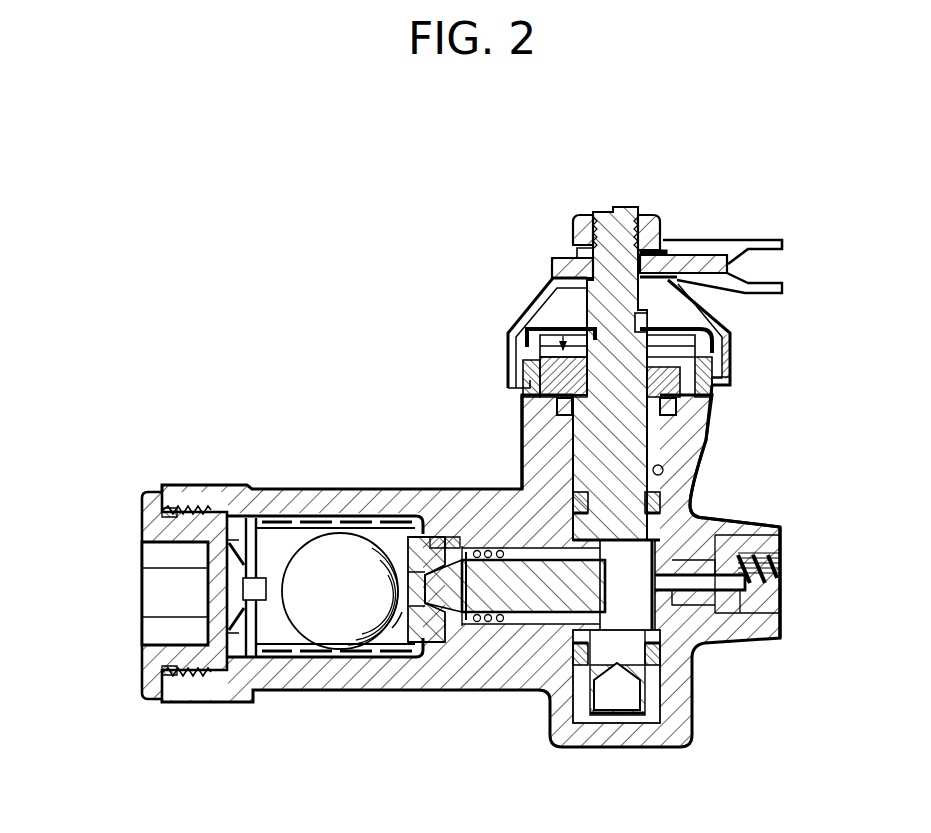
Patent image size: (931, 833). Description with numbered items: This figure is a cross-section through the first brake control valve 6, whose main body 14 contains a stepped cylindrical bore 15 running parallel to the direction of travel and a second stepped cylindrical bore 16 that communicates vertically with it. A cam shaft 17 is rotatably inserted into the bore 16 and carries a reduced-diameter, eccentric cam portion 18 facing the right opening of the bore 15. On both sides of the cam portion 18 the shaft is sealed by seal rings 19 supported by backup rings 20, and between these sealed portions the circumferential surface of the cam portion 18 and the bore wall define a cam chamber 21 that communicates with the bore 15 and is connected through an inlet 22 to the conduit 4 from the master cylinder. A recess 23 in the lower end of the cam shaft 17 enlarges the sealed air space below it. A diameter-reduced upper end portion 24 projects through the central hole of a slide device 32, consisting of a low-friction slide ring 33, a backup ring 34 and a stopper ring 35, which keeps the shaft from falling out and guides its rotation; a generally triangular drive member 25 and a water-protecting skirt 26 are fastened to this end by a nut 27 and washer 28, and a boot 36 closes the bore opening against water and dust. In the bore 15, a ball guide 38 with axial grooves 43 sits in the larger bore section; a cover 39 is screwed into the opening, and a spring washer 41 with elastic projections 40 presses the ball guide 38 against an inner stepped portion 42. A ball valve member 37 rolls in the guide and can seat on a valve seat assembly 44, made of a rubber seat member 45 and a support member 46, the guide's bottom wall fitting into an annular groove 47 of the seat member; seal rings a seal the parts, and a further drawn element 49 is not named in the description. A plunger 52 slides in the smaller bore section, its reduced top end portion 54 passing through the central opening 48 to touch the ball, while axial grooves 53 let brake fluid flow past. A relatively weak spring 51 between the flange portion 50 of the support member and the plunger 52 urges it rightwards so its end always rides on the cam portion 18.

The conduit 4 is at (833, 582).
The first brake control valve 6 is at (760, 374).
The main body 14 is at (345, 503).
The stepped cylindrical bore 15 is at (158, 535).
The stepped cylindrical bore 16 is at (662, 468).
The cam shaft 17 is at (627, 442).
The cam portion 18 is at (705, 622).
The seal rings 19 is at (661, 508).
The backup rings 20 is at (661, 493).
The cam chamber 21 is at (782, 530).
The inlet 22 is at (785, 577).
The recess 23 is at (625, 690).
The upper end portion 24 is at (647, 207).
The drive member 25 is at (782, 241).
The water-protecting skirt 26 is at (725, 320).
The nut 27 is at (660, 227).
The washer 28 is at (655, 250).
The slide device 32 is at (562, 350).
The slide ring 33 is at (523, 388).
The backup ring 34 is at (532, 373).
The stopper ring 35 is at (560, 327).
The boot 36 is at (735, 347).
The ball valve member 37 is at (356, 587).
The ball guide 38 is at (265, 512).
The cover 39 is at (178, 596).
The elastic projections 40 is at (247, 587).
The spring washer 41 is at (237, 655).
The inner stepped portion 42 is at (445, 632).
The grooves 43 is at (297, 522).
The valve seat assembly 44 is at (400, 633).
The seat member 45 is at (408, 645).
The support member 46 is at (465, 622).
The annular groove 47 is at (435, 642).
The central opening 48 is at (440, 537).
The spring 49 is at (484, 622).
The flange portion 50 is at (457, 540).
The spring 51 is at (502, 626).
The plunger 52 is at (546, 612).
The axial grooves 53 is at (586, 640).
The top end portion 54 is at (403, 512).
The seal rings a is at (162, 670).